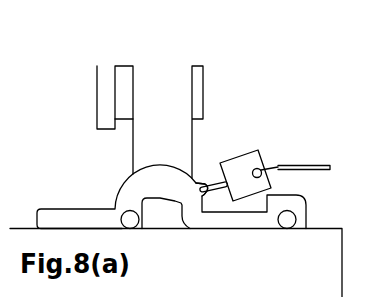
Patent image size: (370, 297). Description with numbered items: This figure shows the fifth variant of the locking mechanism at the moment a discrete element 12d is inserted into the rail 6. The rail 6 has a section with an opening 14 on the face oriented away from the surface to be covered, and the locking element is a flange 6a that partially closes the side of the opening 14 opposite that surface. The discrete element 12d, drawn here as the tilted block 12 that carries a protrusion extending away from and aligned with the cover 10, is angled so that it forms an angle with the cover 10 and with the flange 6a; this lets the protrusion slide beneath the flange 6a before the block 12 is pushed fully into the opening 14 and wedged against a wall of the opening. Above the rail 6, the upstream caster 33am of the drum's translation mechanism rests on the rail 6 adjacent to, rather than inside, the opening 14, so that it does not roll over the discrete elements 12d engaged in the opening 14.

The rail 6 is at (240, 220).
The flange 6a is at (201, 176).
The cover 10 is at (327, 163).
The pivot block 12 is at (267, 160).
The discrete element 12d is at (259, 168).
The opening 14 is at (223, 200).
The upstream caster 33am is at (157, 77).